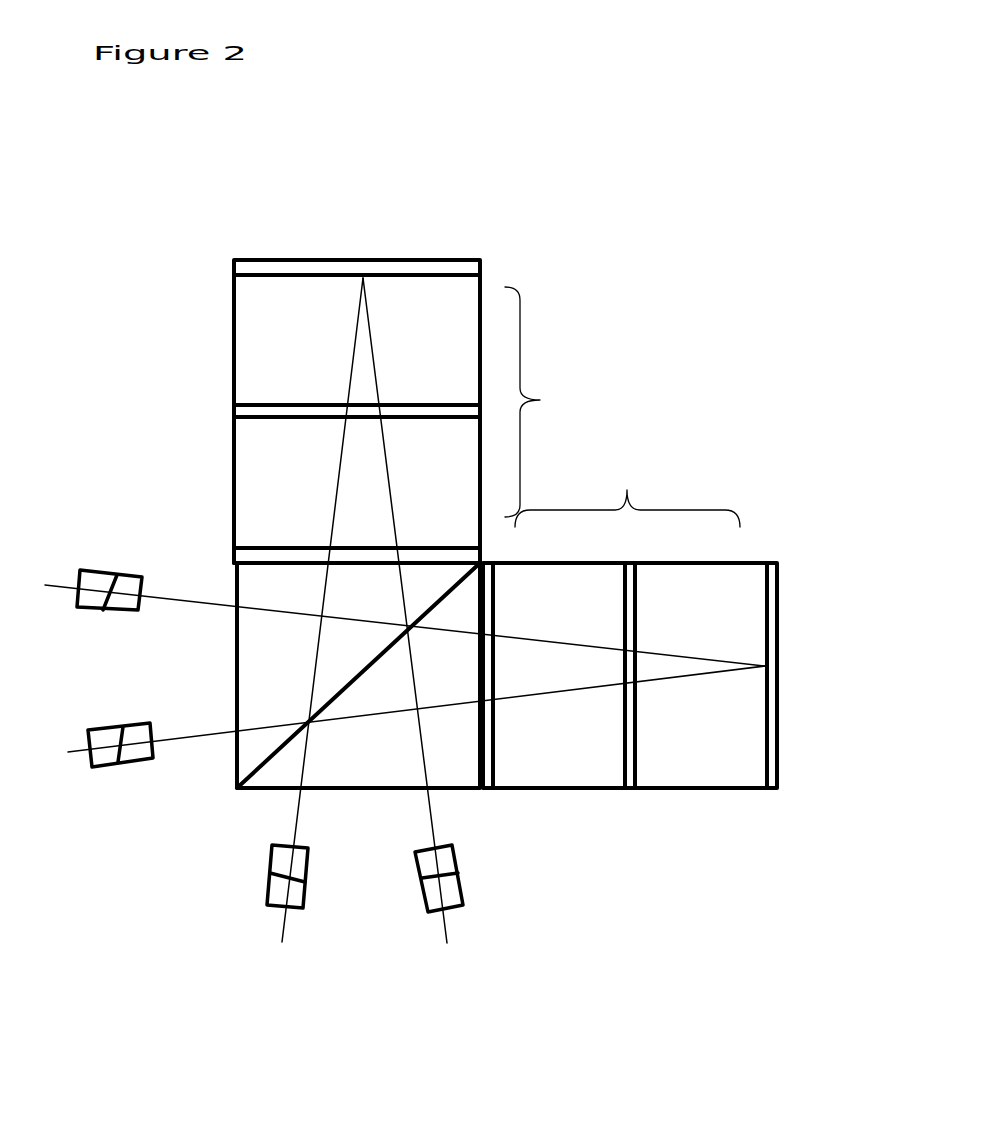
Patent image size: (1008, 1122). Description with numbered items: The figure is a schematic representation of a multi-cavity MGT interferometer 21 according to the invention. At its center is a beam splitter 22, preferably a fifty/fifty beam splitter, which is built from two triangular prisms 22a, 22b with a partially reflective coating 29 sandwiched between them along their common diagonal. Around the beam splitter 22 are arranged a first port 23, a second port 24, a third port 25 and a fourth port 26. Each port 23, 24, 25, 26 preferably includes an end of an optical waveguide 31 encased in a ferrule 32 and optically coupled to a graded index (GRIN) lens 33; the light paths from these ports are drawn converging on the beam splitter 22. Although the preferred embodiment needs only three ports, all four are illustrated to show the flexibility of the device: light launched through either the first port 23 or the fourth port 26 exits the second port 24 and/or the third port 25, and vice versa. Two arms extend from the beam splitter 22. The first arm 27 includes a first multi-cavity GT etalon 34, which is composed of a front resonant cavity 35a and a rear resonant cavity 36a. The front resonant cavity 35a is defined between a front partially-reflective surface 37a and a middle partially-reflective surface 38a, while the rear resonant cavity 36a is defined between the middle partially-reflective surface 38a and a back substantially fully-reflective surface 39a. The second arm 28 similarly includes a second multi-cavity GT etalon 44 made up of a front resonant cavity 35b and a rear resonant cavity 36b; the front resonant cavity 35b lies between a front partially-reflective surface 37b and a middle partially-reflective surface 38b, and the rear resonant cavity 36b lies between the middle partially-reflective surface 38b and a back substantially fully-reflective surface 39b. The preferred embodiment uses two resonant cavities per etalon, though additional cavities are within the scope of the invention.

The multi-cavity MGT interferometer 21 is at (596, 237).
The beam splitter 22 is at (220, 776).
The triangular prism 22a is at (358, 675).
The triangular prism 22b is at (358, 675).
The first port 23 is at (57, 550).
The second port 24 is at (97, 803).
The third port 25 is at (236, 905).
The fourth port 26 is at (495, 928).
The first arm 27 is at (541, 402).
The second arm 28 is at (627, 490).
The partially reflective coating 29 is at (260, 788).
The optical waveguide 31 is at (78, 750).
The ferrule 32 is at (90, 598).
The graded index (GRIN) lens 33 is at (137, 725).
The first multi-cavity GT etalon 34 is at (211, 239).
The front resonant cavity 35a is at (260, 477).
The front resonant cavity 35b is at (578, 765).
The rear resonant cavity 36a is at (306, 346).
The rear resonant cavity 36b is at (708, 752).
The front partially-reflective surface 37a is at (233, 550).
The front partially-reflective surface 37b is at (495, 790).
The middle partially-reflective surface 38a is at (233, 407).
The middle partially-reflective surface 38b is at (640, 790).
The back substantially fully-reflective surface 39a is at (233, 275).
The back substantially fully-reflective surface 39b is at (782, 790).
The second multi-cavity GT etalon 44 is at (768, 463).